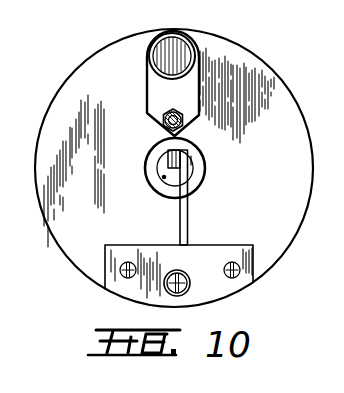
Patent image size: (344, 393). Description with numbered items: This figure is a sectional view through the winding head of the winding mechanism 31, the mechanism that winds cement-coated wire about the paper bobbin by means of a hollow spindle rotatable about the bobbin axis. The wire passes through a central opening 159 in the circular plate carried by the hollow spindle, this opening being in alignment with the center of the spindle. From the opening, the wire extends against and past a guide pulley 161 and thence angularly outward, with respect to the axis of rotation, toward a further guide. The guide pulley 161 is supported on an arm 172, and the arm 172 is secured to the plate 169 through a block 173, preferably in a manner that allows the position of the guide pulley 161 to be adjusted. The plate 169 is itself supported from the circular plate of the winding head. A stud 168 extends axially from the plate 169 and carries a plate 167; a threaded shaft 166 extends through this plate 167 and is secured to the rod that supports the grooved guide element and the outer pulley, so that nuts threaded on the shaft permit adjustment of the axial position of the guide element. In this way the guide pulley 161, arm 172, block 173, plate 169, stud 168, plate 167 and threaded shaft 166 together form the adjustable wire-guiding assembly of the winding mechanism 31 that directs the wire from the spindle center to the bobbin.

The winding mechanism 31 is at (82, 272).
The central opening 159 is at (163, 179).
The guide pulley 161 is at (160, 163).
The threaded shaft 166 is at (164, 120).
The plate 167 is at (158, 93).
The stud 168 is at (176, 53).
The plate 169 is at (238, 67).
The arm 172 is at (190, 212).
The block 173 is at (221, 244).